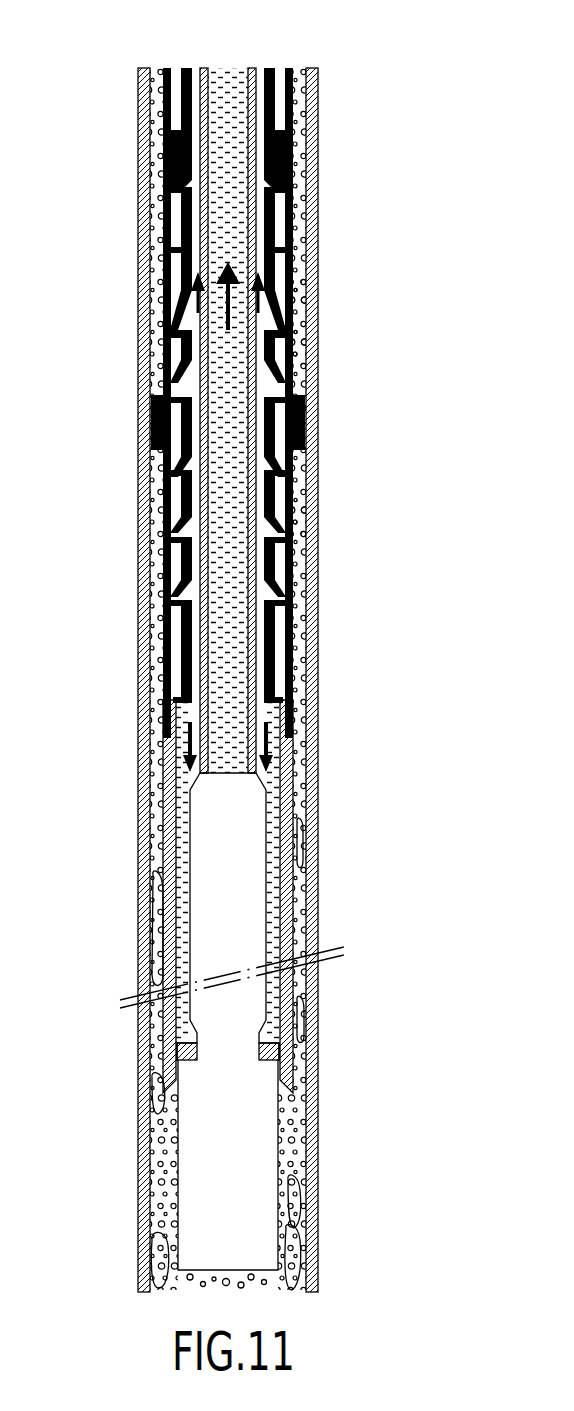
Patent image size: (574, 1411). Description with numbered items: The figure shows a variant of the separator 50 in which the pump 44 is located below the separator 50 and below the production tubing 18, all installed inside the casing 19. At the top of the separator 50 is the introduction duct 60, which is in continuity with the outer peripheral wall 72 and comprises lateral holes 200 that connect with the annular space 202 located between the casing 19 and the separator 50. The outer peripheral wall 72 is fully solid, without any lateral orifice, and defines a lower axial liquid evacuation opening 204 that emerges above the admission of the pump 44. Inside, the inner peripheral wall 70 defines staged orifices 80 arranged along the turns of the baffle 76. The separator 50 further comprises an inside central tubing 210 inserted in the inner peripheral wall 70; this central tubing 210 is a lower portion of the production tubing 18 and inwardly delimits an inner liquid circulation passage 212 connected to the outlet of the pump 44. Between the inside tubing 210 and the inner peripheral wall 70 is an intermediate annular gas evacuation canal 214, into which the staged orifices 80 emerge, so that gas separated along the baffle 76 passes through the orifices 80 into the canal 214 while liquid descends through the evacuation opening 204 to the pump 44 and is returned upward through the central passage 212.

The production tubing 18 is at (196, 64).
The casing 19 is at (140, 240).
The pump 44 is at (265, 857).
The separator 50 is at (140, 396).
The introduction duct 60 is at (308, 97).
The inner peripheral wall 70 is at (305, 413).
The outer peripheral wall 72 is at (312, 294).
The baffle 76 is at (310, 522).
The staged orifices 80 is at (272, 255).
The lateral holes 200 is at (310, 145).
The annular space 202 is at (310, 340).
The lower axial liquid evacuation opening 204 is at (312, 730).
The inside central tubing 210 is at (255, 632).
The inner liquid circulation passage 212 is at (232, 598).
The intermediate annular gas evacuation canal 214 is at (262, 347).